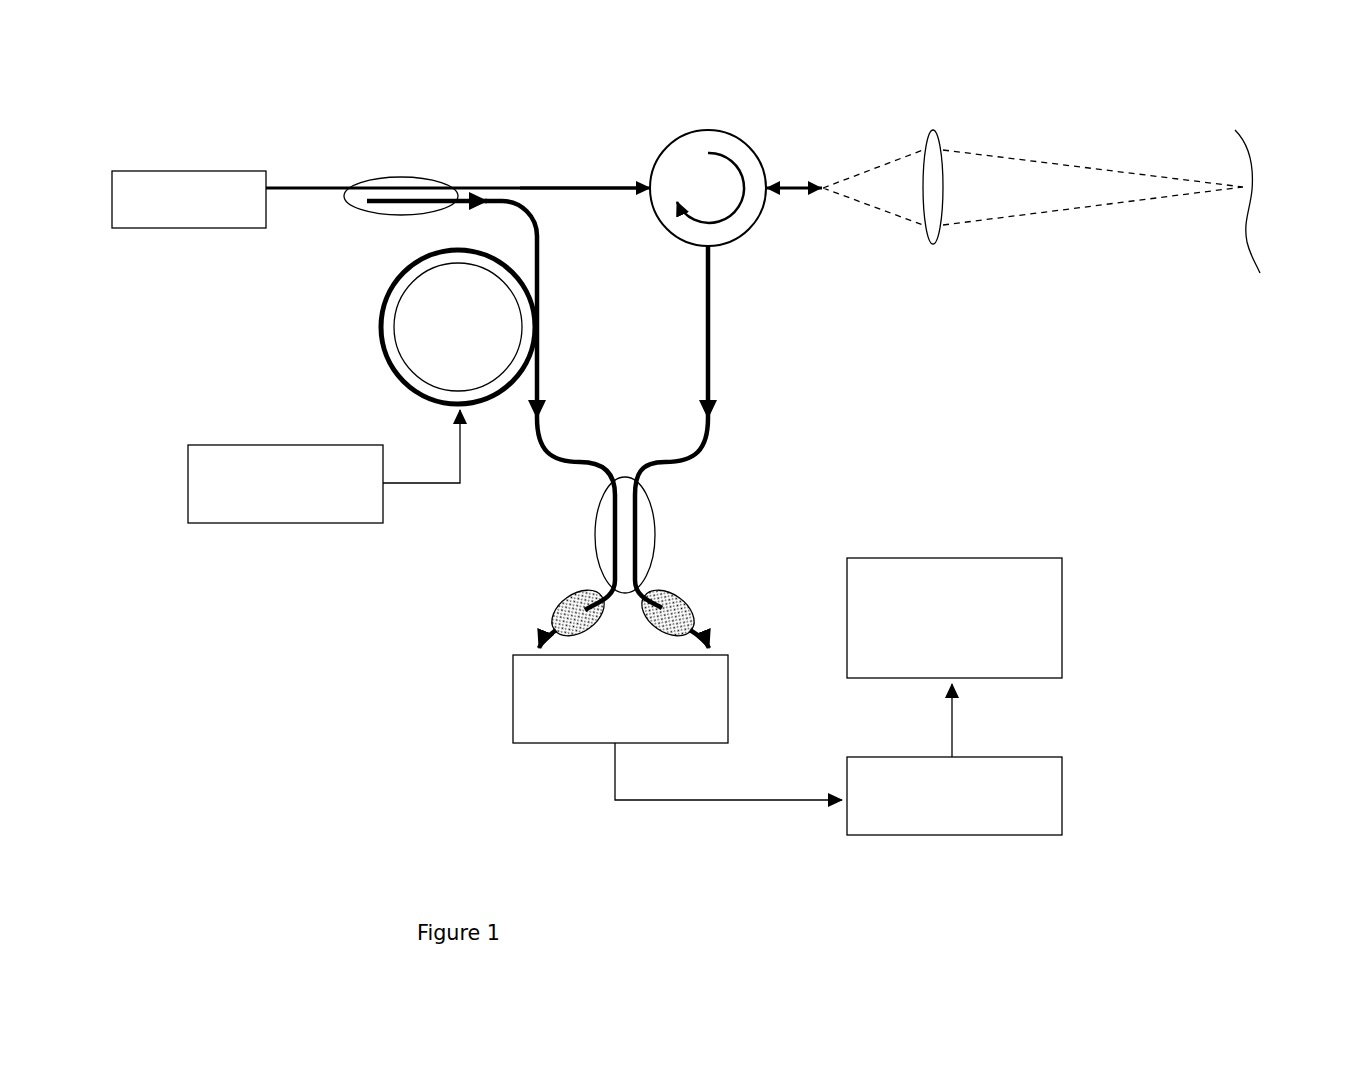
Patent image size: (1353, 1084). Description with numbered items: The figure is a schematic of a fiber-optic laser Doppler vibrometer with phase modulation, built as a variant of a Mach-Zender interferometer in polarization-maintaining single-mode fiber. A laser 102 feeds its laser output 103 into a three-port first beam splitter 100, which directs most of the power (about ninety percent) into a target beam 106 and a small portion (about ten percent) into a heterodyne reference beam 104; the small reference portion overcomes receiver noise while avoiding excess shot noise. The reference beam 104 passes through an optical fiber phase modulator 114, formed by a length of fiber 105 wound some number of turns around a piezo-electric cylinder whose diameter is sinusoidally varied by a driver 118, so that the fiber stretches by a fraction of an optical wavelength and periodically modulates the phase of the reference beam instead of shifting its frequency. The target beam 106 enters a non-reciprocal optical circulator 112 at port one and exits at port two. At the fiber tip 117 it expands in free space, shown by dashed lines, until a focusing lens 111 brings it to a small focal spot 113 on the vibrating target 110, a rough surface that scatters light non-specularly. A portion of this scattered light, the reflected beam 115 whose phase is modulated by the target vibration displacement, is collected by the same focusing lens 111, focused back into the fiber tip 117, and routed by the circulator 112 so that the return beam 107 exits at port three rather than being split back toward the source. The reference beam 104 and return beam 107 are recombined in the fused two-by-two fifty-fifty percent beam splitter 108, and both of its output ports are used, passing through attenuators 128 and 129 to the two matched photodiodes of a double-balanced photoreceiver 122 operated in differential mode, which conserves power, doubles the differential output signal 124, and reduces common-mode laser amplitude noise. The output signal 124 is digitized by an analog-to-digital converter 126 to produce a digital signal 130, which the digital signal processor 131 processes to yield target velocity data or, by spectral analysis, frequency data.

The first beam splitter 100 is at (368, 216).
The laser 102 is at (132, 168).
The laser output 103 is at (293, 183).
The heterodyne reference beam 104 is at (545, 248).
The reference beam fiber 105 is at (388, 372).
The target beam 106 is at (565, 182).
The return beam 107 is at (720, 330).
The 50/50% beam splitter 108 is at (662, 510).
The vibrating target 110 is at (1228, 226).
The focusing lens 111 is at (940, 127).
The non-reciprocal optical circulator 112 is at (706, 194).
The focal spot 113 is at (1246, 178).
The optical fiber phase modulator 114 is at (428, 290).
The reflected beam 115 is at (797, 203).
The fiber tip 117 is at (828, 181).
The driver 118 is at (208, 443).
The double-balanced photoreceiver 122 is at (537, 752).
The differential output signal 124 is at (624, 777).
The analog-to-digital converter 126 is at (882, 848).
The attenuator 128 is at (563, 594).
The attenuator 129 is at (703, 605).
The digital signal 130 is at (965, 722).
The digital signal processor 131 is at (867, 555).